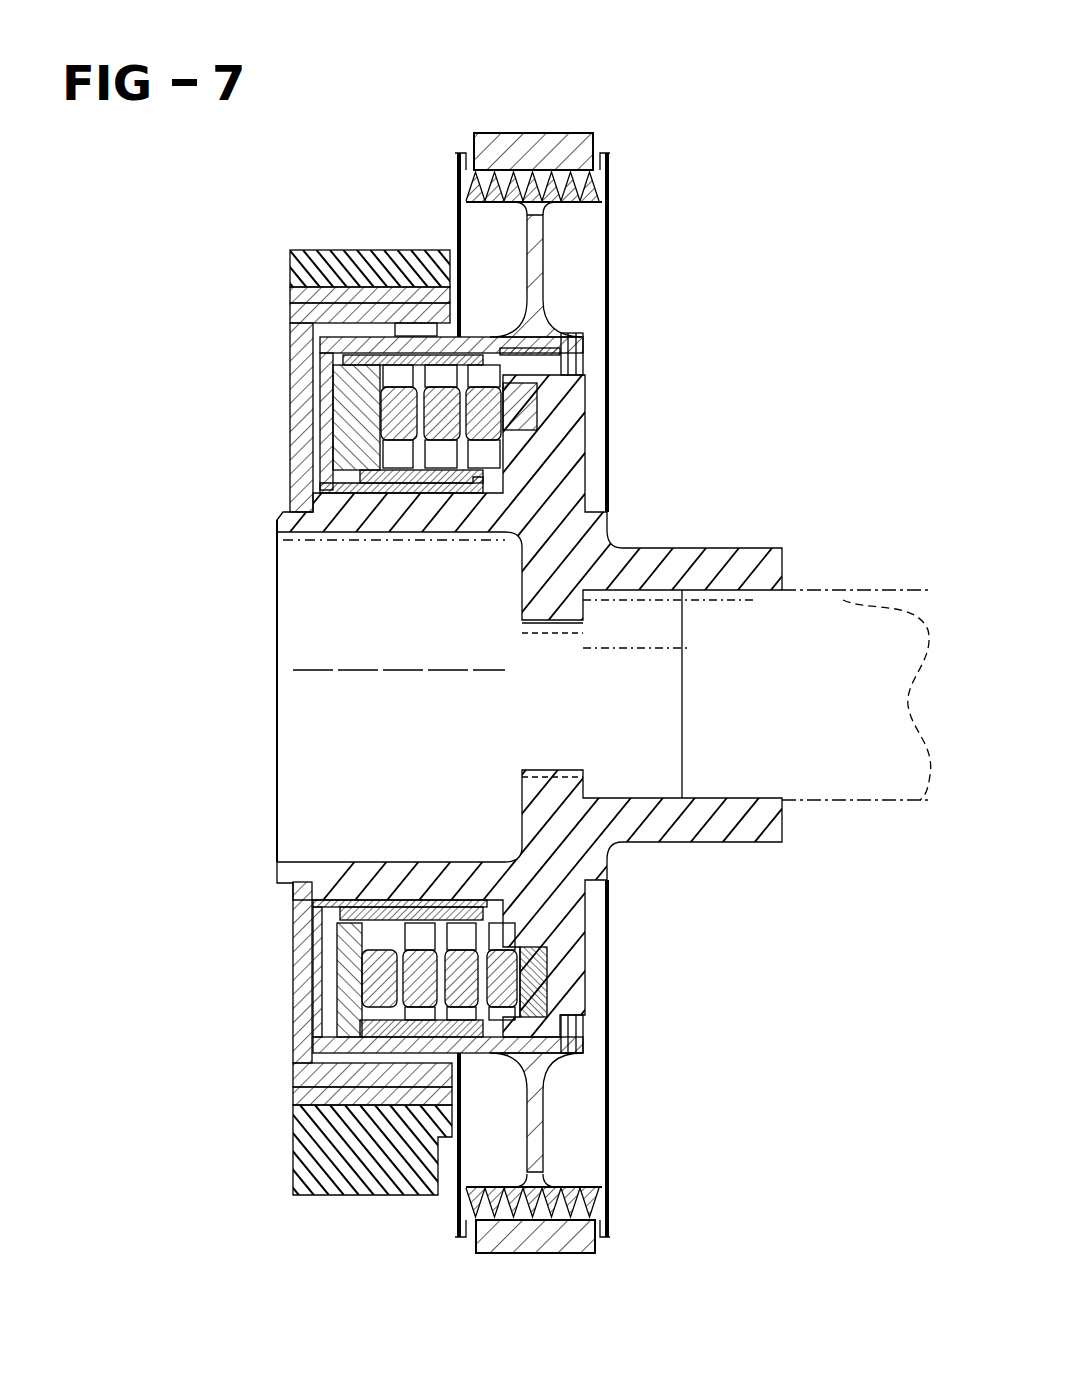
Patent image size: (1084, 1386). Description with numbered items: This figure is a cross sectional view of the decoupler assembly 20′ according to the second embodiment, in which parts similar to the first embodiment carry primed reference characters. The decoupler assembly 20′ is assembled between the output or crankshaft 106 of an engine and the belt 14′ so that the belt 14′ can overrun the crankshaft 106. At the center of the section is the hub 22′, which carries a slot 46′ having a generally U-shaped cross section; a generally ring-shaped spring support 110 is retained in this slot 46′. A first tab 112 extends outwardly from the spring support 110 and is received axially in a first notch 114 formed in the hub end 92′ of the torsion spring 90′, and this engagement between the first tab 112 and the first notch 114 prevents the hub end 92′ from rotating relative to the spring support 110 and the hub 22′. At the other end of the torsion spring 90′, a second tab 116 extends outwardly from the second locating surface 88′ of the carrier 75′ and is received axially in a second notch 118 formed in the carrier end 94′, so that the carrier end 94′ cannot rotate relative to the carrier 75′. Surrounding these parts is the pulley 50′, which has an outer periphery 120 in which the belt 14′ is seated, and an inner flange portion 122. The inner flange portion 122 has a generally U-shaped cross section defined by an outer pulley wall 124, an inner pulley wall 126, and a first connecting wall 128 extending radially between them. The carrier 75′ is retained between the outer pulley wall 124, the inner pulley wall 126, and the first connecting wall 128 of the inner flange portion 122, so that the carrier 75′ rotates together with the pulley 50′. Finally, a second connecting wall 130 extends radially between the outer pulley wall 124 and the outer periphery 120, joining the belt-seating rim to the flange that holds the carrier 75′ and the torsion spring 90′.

The belt 14′ is at (524, 150).
The decoupler assembly 20′ is at (780, 283).
The hub 22′ is at (712, 842).
The slot 46′ is at (542, 1000).
The pulley 50′ is at (548, 312).
The carrier 75′ is at (350, 480).
The second locating surface 88′ is at (300, 488).
The torsion spring 90′ is at (455, 447).
The hub end 92′ is at (498, 992).
The carrier end 94′ is at (430, 409).
The crankshaft 106 is at (840, 586).
The spring support 110 is at (542, 974).
The first tab 112 is at (546, 957).
The first notch 114 is at (520, 948).
The second tab 116 is at (333, 392).
The second notch 118 is at (335, 425).
The outer periphery 120 is at (600, 206).
The inner flange portion 122 is at (470, 337).
The outer pulley wall 124 is at (366, 347).
The inner pulley wall 126 is at (400, 472).
The first connecting wall 128 is at (352, 432).
The second connecting wall 130 is at (540, 250).